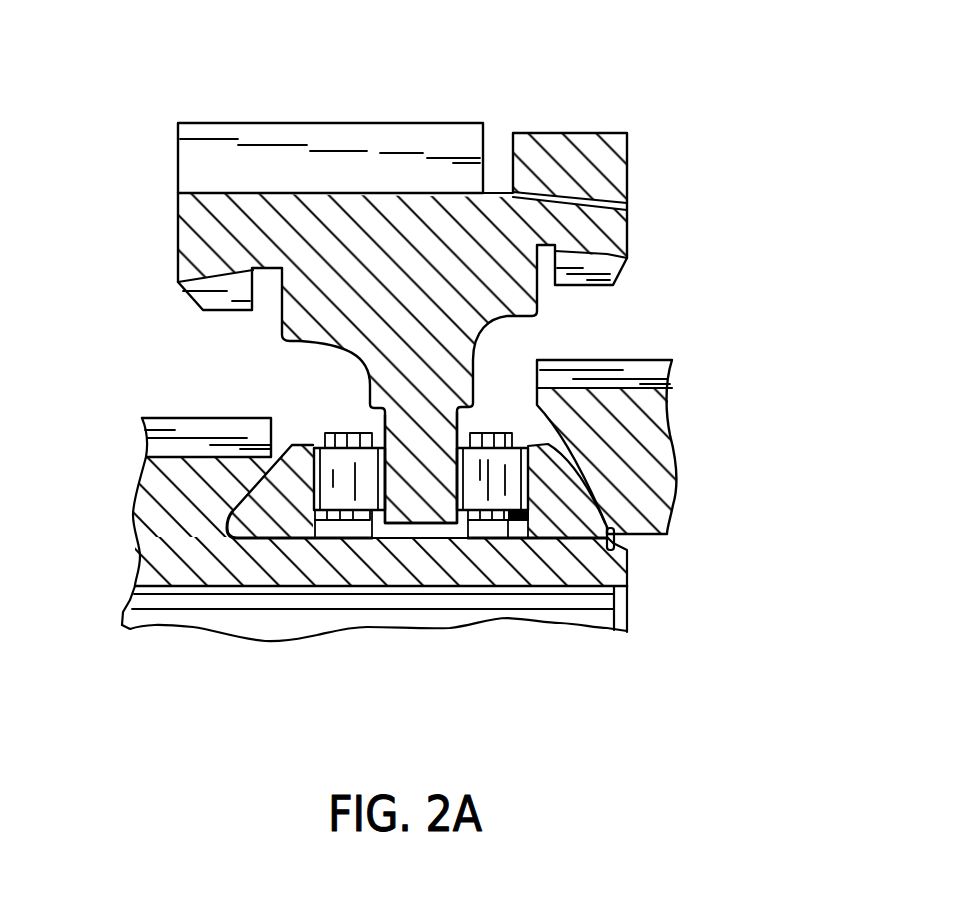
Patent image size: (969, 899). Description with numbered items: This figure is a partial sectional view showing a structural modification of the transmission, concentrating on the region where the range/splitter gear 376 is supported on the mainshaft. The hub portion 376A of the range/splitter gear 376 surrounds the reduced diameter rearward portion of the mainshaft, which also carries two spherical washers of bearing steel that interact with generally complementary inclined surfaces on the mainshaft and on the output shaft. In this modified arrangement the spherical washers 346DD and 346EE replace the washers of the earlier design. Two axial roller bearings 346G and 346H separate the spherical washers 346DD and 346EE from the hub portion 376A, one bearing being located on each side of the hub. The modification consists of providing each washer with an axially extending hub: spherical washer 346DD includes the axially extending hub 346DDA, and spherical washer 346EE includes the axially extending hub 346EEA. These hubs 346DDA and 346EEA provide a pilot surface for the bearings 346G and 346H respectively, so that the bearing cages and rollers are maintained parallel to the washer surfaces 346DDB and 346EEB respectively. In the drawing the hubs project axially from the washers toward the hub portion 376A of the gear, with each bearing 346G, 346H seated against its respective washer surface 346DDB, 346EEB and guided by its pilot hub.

The range/splitter gear 376 is at (365, 150).
The hub portion 376A is at (424, 505).
The spherical washer 346DD is at (263, 493).
The axially extending hub 346DDA is at (345, 530).
The surface 346DDB is at (318, 538).
The axial roller bearing 346G is at (325, 466).
The axial roller bearing 346H is at (478, 472).
The spherical washer 346EE is at (563, 507).
The axially extending hub 346EEA is at (495, 530).
The surface 346EEB is at (510, 538).